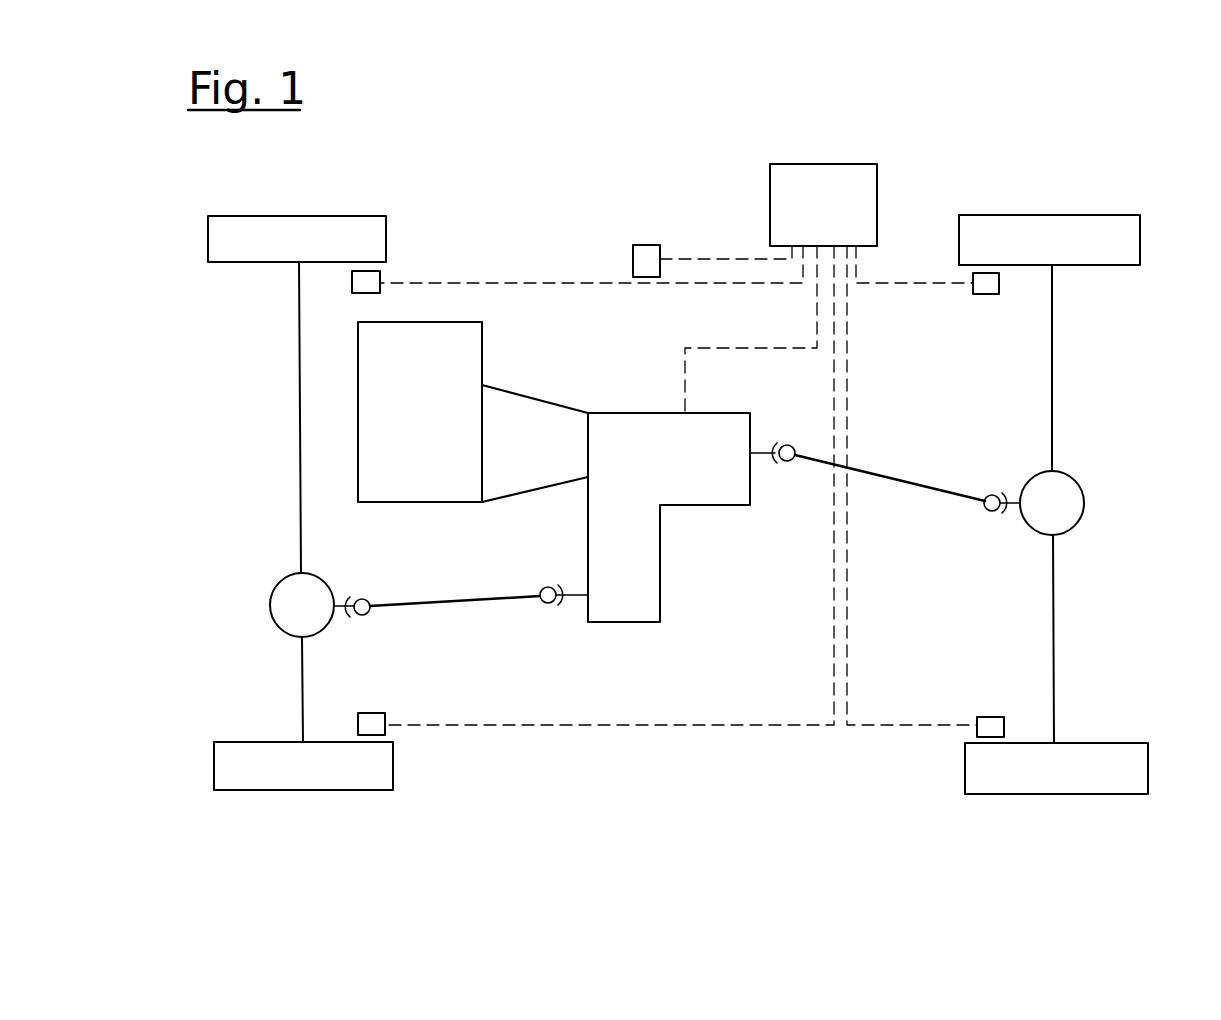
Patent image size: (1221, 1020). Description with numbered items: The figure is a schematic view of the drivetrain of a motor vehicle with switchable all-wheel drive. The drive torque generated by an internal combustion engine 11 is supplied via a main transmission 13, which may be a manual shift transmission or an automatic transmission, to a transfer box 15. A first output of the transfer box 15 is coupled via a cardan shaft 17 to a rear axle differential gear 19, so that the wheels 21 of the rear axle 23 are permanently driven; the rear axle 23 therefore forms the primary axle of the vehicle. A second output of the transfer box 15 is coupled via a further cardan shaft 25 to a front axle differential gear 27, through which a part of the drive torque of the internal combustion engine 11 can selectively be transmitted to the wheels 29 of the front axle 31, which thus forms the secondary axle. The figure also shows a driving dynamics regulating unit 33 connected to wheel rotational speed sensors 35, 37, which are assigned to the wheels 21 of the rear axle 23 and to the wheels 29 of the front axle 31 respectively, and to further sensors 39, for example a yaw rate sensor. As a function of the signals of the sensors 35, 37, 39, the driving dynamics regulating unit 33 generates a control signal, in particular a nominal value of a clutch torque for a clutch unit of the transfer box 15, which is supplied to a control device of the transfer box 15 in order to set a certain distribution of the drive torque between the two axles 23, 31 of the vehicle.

The internal combustion engine 11 is at (406, 425).
The main transmission 13 is at (512, 460).
The transfer box 15 is at (651, 475).
The cardan shaft 17 is at (892, 475).
The rear axle differential gear 19 is at (1085, 492).
The wheels 21 is at (1110, 215).
The rear axle 23 is at (1090, 395).
The cardan shaft 25 is at (456, 604).
The front axle differential gear 27 is at (270, 598).
The wheels 29 is at (238, 216).
The front axle 31 is at (287, 471).
The driving dynamics regulating unit 33 is at (807, 218).
The wheel rotational speed sensors 35 is at (985, 295).
The wheel rotational speed sensors 37 is at (352, 282).
The further sensors 39 is at (645, 244).